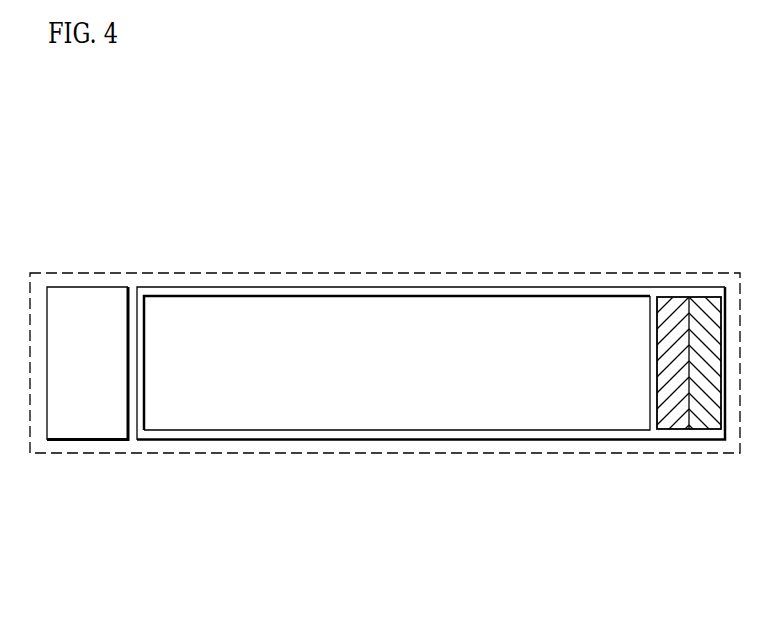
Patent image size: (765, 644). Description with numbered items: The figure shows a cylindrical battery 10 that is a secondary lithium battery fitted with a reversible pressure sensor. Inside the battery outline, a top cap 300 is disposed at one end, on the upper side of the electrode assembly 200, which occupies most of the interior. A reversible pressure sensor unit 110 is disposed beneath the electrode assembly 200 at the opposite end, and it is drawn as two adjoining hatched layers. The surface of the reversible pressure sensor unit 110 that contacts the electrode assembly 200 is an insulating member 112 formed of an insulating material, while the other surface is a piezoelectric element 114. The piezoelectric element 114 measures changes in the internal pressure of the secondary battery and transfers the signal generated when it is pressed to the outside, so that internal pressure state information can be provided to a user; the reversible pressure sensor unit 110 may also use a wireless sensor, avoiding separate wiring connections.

The cylindrical battery 10 is at (393, 273).
The top cap 300 is at (87, 363).
The electrode assembly 200 is at (431, 363).
The reversible pressure sensor unit 110 is at (646, 410).
The insulating member 112 is at (660, 298).
The piezoelectric element 114 is at (708, 302).